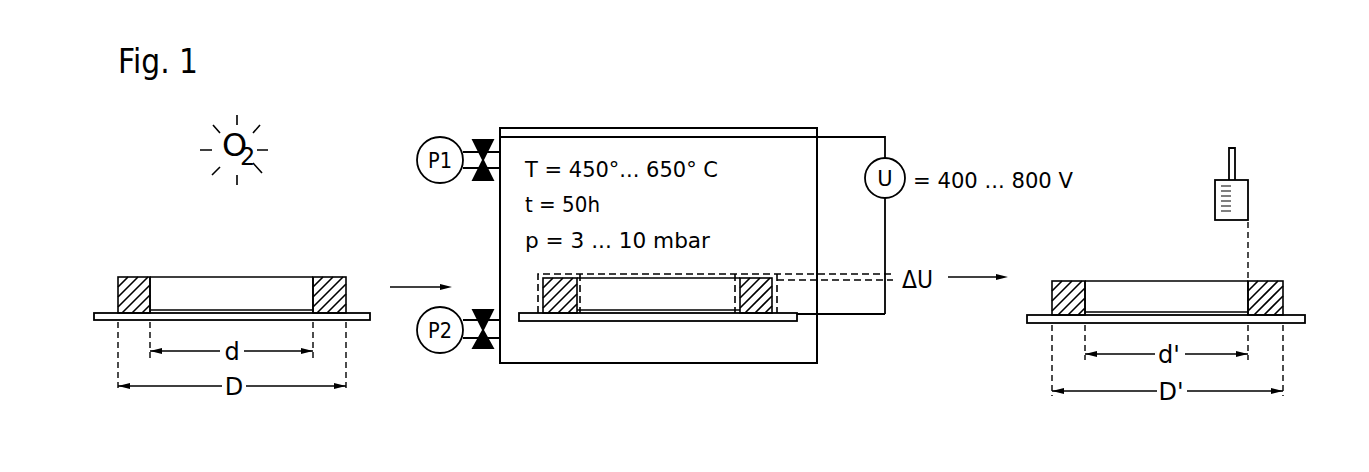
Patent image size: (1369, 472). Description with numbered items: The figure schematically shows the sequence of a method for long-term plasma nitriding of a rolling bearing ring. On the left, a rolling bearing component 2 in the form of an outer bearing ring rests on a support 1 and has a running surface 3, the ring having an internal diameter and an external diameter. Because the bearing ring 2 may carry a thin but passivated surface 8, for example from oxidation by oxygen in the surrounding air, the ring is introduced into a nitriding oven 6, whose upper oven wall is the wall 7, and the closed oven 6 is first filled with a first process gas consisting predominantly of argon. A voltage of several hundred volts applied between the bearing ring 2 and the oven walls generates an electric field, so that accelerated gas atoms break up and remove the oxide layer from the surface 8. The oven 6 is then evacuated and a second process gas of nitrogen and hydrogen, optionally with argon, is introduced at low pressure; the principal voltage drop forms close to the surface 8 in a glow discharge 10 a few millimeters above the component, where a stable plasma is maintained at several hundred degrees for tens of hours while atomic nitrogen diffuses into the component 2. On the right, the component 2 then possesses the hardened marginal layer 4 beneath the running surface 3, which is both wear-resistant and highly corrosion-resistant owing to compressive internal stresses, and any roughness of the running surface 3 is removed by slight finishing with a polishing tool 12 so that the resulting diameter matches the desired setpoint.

The support 1 is at (358, 313).
The rolling bearing component 2 is at (131, 290).
The running surface 3 is at (158, 283).
The hardened marginal layer 4 is at (322, 283).
The nitriding oven 6 is at (640, 145).
The upper oven wall 7 is at (757, 137).
The passivated surface 8 is at (304, 284).
The glow discharge 10 is at (593, 274).
The polishing tool 12 is at (1215, 200).